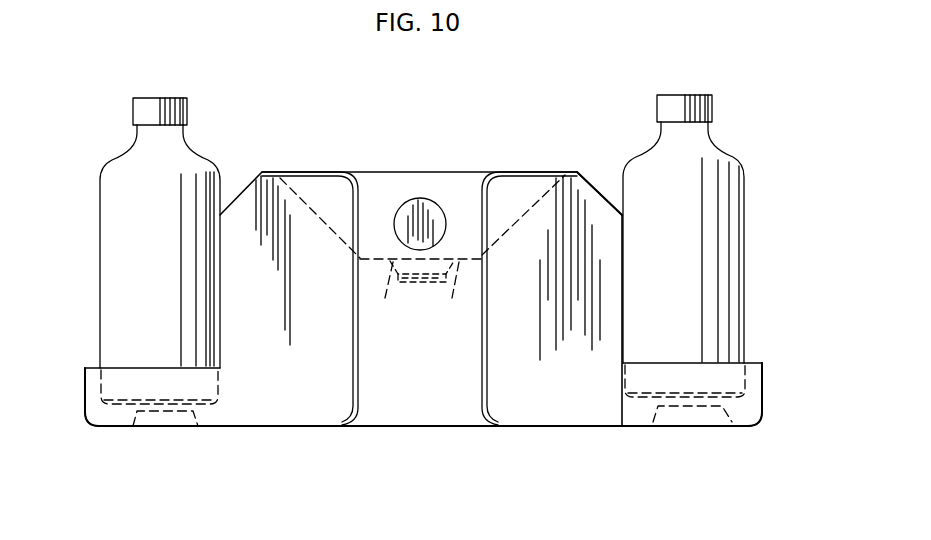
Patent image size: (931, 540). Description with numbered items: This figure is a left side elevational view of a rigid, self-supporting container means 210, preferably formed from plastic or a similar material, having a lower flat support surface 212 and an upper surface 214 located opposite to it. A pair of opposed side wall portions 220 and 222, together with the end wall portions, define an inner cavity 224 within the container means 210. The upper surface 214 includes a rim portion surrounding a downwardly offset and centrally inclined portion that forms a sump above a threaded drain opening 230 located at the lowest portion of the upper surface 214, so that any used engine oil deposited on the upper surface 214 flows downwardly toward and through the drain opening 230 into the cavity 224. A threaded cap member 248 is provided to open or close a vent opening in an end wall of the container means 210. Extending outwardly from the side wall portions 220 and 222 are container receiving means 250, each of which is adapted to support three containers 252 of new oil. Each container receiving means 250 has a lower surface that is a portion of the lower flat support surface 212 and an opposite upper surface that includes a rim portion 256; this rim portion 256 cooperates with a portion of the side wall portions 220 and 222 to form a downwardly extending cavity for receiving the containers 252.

The container means 210 is at (230, 450).
The lower flat support surface 212 is at (586, 427).
The upper surface 214 is at (421, 299).
The side wall portion 220 is at (221, 326).
The side wall portion 222 is at (622, 233).
The inner cavity 224 is at (400, 405).
The threaded drain opening 230 is at (411, 302).
The threaded cap member 248 is at (407, 198).
The container receiving means 250 is at (86, 436).
The container 252 is at (196, 158).
The rim portion 256 is at (88, 368).